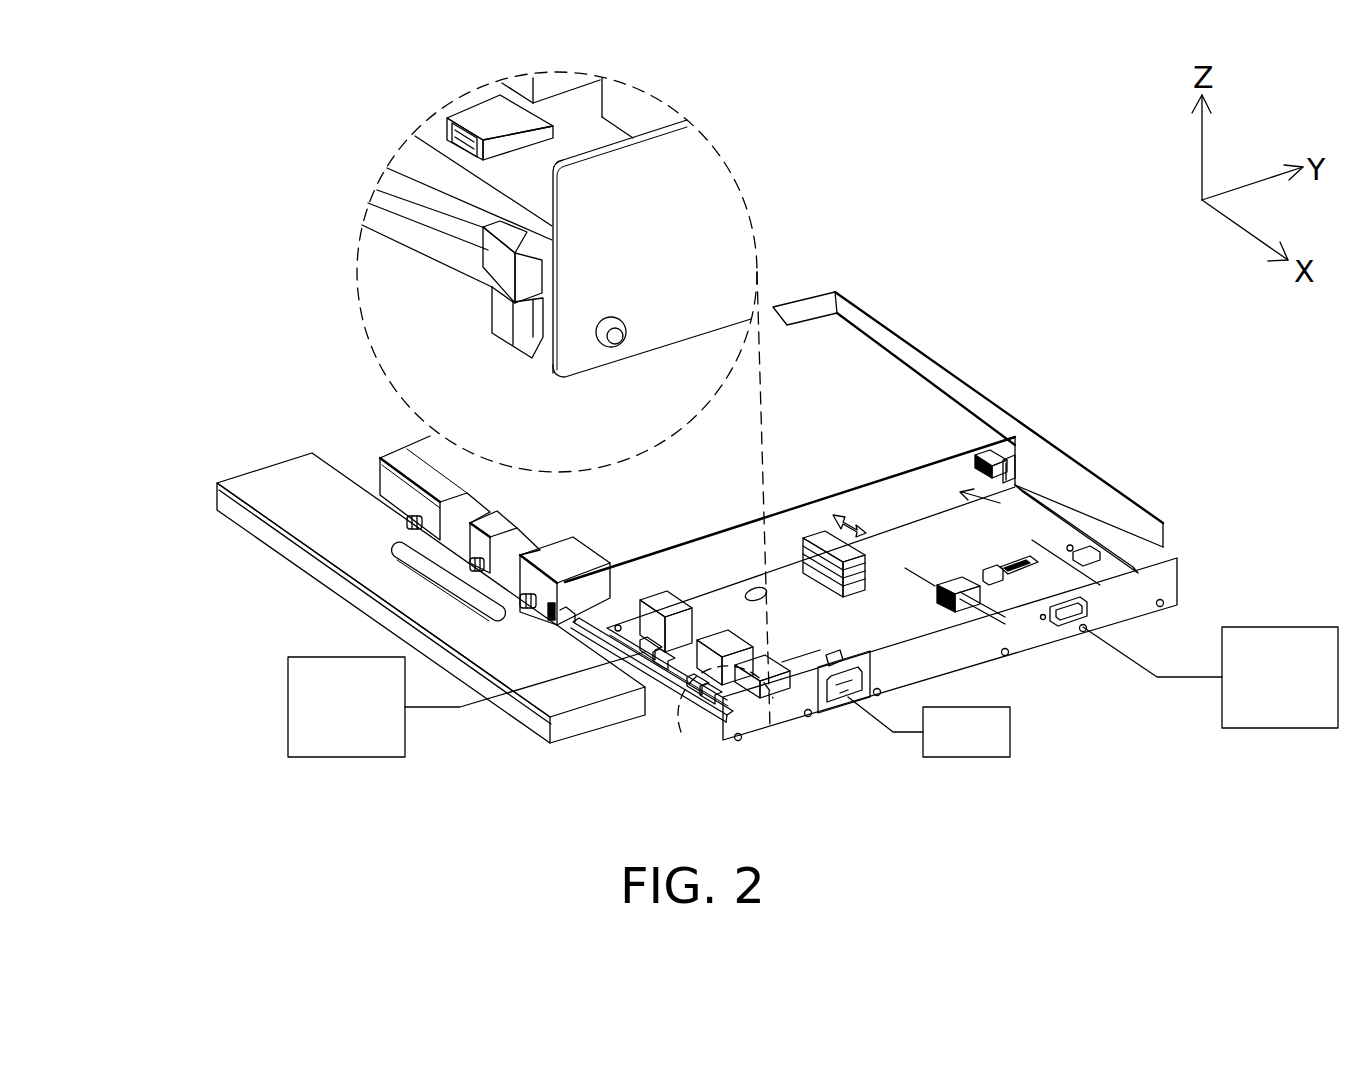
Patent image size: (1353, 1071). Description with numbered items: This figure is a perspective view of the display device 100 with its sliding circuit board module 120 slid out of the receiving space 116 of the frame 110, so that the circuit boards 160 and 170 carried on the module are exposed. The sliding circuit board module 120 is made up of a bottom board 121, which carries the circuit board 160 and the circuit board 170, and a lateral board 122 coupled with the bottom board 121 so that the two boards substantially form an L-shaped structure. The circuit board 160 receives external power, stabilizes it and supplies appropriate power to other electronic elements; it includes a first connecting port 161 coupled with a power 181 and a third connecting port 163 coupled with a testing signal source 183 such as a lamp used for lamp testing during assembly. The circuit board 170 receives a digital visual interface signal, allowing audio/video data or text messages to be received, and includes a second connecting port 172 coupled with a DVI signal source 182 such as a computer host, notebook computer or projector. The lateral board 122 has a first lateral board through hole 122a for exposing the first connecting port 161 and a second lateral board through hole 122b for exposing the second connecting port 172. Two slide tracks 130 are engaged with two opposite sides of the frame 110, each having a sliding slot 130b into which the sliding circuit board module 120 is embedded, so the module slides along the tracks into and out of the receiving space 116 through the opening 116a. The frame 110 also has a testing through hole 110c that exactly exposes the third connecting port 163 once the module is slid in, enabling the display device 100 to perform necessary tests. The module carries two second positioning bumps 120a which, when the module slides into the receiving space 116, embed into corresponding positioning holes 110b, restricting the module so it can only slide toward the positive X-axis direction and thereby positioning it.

The display device 100 is at (112, 109).
The frame 110 is at (860, 350).
The positioning holes 110b is at (540, 614).
The testing through hole 110c is at (452, 500).
The receiving space 116 is at (858, 397).
The opening 116a is at (1028, 530).
The sliding circuit board module 120 is at (1323, 480).
The second positioning bumps 120a is at (530, 297).
The bottom board 121 is at (1028, 550).
The lateral board 122 is at (1168, 583).
The first lateral board through hole 122a is at (840, 713).
The second lateral board through hole 122b is at (1057, 624).
The slide tracks 130 is at (1017, 478).
The sliding slot 130b is at (975, 472).
The circuit board 160 is at (890, 587).
The first connecting port 161 is at (837, 652).
The third connecting port 163 is at (657, 637).
The circuit board 170 is at (1000, 590).
The second connecting port 172 is at (1085, 601).
The power 181 is at (960, 759).
The DVI signal source 182 is at (1280, 730).
The testing signal source 183 is at (343, 758).